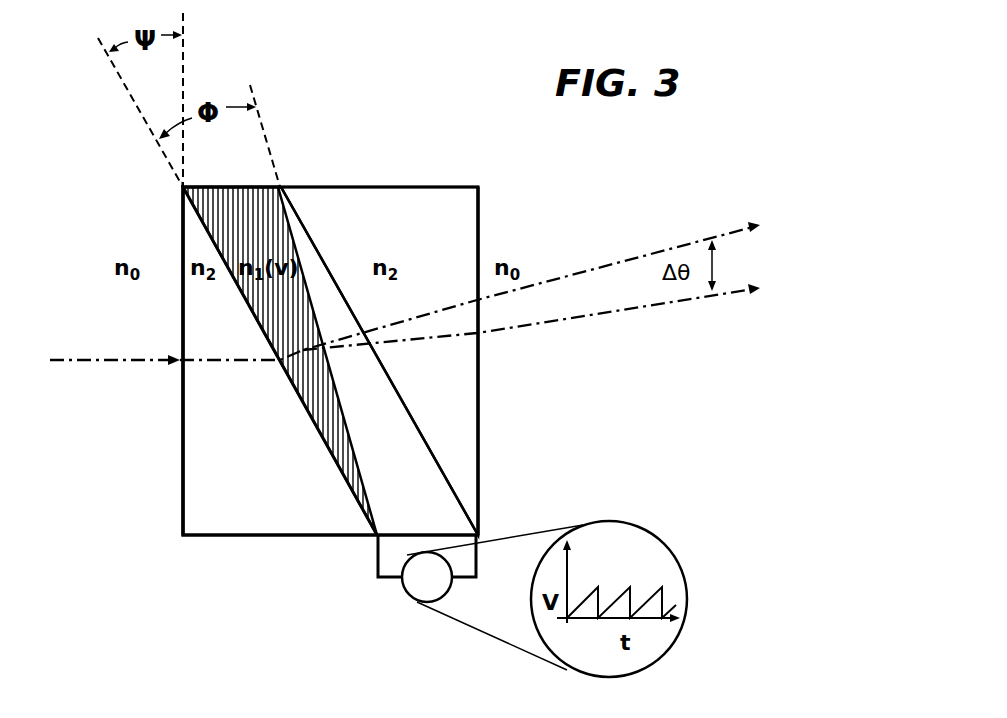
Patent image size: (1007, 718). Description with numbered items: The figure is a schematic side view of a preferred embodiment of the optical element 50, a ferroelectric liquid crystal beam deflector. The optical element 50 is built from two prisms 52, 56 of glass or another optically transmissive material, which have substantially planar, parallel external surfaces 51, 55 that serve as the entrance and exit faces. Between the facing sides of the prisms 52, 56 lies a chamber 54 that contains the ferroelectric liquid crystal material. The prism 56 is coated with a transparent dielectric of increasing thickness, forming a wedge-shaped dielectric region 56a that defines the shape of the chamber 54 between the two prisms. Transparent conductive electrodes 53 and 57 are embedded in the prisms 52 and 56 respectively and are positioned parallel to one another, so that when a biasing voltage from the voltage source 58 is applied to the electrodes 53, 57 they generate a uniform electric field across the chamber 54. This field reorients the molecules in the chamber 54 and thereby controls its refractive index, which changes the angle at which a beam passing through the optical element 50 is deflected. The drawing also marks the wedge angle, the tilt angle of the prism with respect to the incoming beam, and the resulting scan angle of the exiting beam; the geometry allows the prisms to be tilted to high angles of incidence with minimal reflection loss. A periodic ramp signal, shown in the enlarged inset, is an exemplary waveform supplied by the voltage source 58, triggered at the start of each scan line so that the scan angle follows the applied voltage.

The optical element 50 is at (371, 133).
The planar parallel external surface 51 is at (178, 445).
The prism 52 is at (182, 510).
The conductive electrode 53 is at (348, 485).
The chamber 54 is at (270, 185).
The planar parallel external surface 55 is at (472, 378).
The prism 56 is at (455, 467).
The dielectric region 56a is at (396, 427).
The conductive electrode 57 is at (453, 498).
The voltage source 58 is at (410, 600).